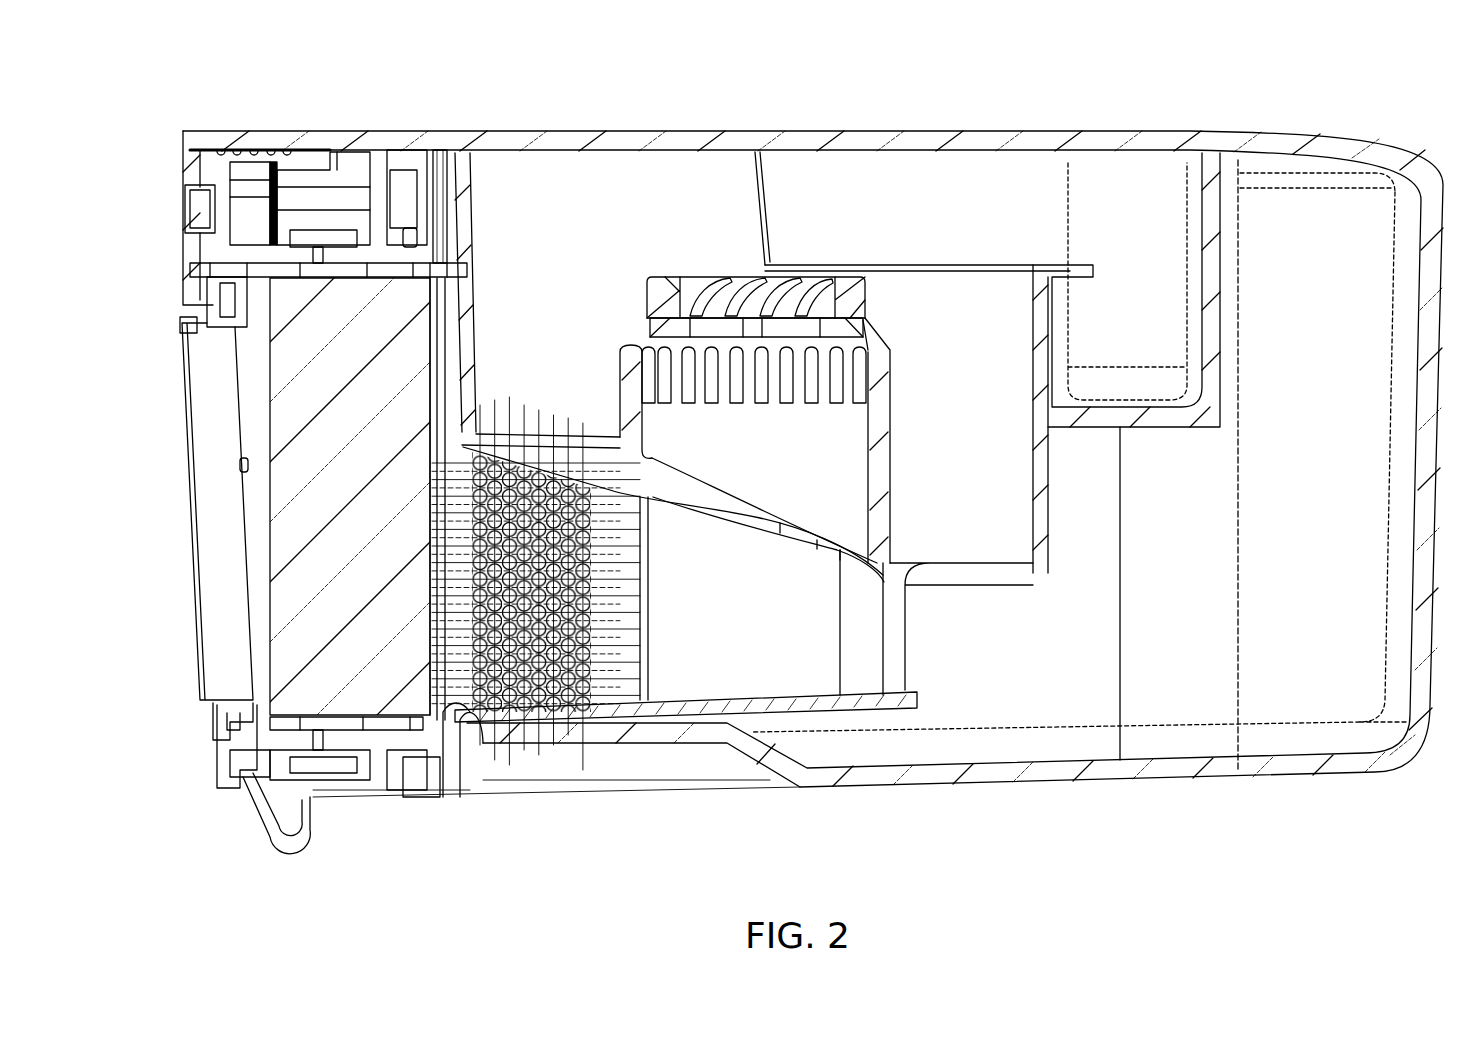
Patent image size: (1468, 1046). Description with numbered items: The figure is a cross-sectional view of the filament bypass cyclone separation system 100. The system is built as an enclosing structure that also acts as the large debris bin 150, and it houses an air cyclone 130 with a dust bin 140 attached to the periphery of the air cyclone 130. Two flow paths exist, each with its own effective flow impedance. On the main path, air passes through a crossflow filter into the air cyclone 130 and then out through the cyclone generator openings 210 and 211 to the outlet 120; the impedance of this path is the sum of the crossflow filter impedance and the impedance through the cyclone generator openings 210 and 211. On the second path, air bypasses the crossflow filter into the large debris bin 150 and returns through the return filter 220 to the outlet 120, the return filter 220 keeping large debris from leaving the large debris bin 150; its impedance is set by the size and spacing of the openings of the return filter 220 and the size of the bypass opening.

The filament bypass cyclone separation system 100 is at (186, 106).
The outlet 120 is at (200, 449).
The air cyclone 130 is at (747, 277).
The dust bin 140 is at (1122, 240).
The large debris bin 150 is at (1342, 622).
The cyclone generator opening 210 is at (695, 378).
The cyclone generator opening 211 is at (660, 282).
The return filter 220 is at (538, 695).